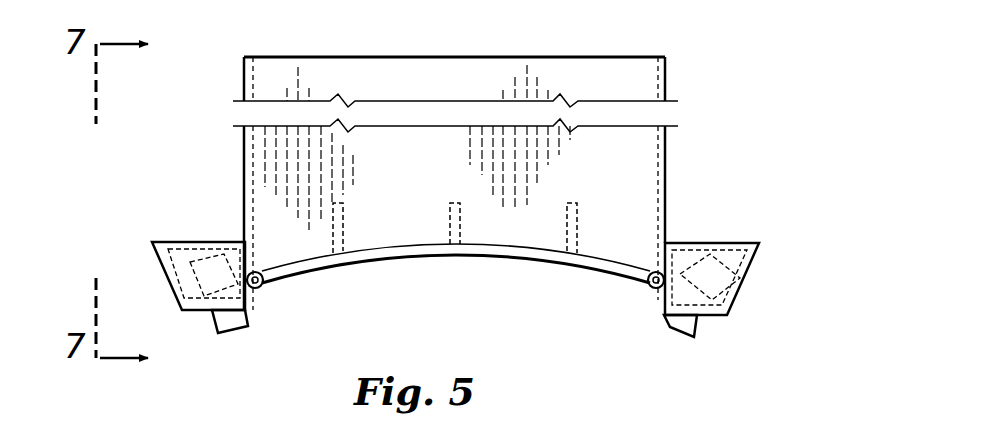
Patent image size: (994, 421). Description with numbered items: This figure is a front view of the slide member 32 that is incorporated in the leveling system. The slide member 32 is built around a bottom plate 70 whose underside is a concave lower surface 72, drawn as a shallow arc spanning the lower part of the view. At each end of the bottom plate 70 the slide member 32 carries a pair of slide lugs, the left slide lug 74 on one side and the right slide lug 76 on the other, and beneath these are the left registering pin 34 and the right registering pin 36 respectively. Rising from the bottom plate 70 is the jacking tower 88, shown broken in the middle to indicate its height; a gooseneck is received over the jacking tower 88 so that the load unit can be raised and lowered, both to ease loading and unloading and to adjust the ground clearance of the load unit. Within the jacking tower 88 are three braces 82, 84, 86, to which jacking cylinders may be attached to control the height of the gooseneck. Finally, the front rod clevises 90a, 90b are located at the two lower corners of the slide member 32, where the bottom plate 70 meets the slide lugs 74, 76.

The slide member 32 is at (772, 240).
The left registering pin 34 is at (226, 320).
The right registering pin 36 is at (690, 337).
The bottom plate 70 is at (595, 270).
The concave lower surface 72 is at (398, 260).
The left slide lug 74 is at (180, 290).
The right slide lug 76 is at (735, 305).
The brace 82 is at (345, 225).
The brace 84 is at (449, 218).
The brace 86 is at (565, 215).
The jacking tower 88 is at (635, 168).
The front rod clevis 90a is at (262, 288).
The front rod clevis 90b is at (655, 290).